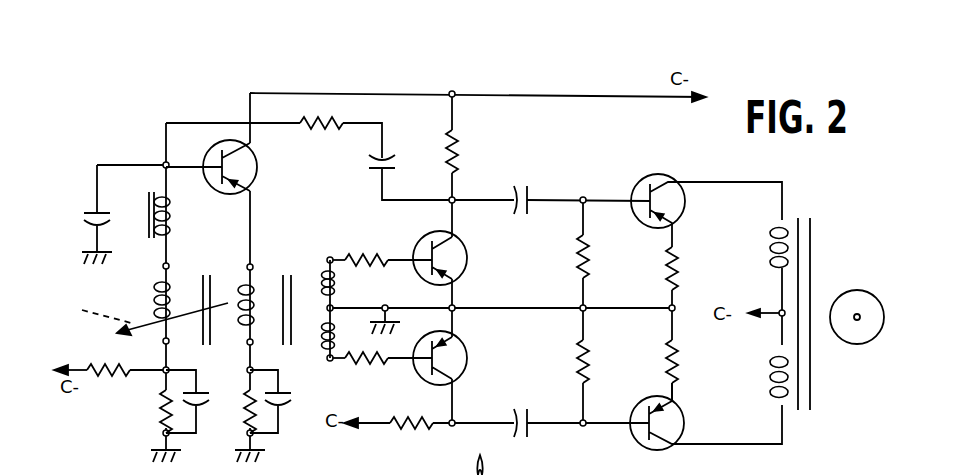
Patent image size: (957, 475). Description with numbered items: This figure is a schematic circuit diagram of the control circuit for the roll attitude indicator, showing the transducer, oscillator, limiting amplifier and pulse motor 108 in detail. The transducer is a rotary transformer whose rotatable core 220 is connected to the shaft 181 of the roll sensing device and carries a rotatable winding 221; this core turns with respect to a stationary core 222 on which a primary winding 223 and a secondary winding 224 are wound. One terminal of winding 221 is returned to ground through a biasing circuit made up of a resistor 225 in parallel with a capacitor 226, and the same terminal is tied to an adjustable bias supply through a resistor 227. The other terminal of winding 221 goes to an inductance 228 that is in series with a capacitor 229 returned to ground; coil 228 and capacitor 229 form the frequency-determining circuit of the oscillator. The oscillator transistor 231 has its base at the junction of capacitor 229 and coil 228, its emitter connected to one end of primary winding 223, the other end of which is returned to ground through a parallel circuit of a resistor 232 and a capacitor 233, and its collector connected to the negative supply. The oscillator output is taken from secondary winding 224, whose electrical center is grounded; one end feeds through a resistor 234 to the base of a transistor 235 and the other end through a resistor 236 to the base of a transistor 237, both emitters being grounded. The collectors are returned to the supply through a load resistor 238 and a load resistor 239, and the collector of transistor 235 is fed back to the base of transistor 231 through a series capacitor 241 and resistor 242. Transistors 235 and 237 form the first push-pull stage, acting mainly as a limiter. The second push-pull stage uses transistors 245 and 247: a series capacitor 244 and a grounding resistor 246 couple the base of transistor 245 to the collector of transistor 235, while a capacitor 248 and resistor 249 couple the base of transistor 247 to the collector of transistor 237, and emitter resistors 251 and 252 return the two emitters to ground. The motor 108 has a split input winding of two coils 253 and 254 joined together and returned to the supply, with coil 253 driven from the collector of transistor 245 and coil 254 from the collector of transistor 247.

The motor 108 is at (866, 283).
The shaft 181 is at (142, 320).
The rotatable core 220 is at (206, 278).
The rotatable winding 221 is at (163, 307).
The stationary core 222 is at (285, 280).
The primary winding 223 is at (255, 275).
The secondary winding 224 is at (336, 284).
The resistor 225 is at (159, 414).
The capacitor 226 is at (222, 389).
The resistor 227 is at (102, 378).
The inductance 228 is at (171, 208).
The capacitor 229 is at (88, 208).
The transistor 231 is at (252, 149).
The resistor 232 is at (246, 420).
The capacitor 233 is at (291, 398).
The resistor 234 is at (348, 258).
The transistor 235 is at (468, 256).
The resistor 236 is at (382, 364).
The transistor 237 is at (469, 349).
The load resistor 238 is at (459, 146).
The load resistor 239 is at (402, 428).
The capacitor 241 is at (370, 169).
The resistor 242 is at (350, 117).
The series capacitor 244 is at (517, 193).
The transistor 245 is at (684, 215).
The resistor 246 is at (594, 258).
The transistor 247 is at (676, 412).
The capacitor 248 is at (523, 432).
The resistor 249 is at (594, 357).
The resistor 251 is at (679, 262).
The resistor 252 is at (677, 349).
The coil 253 is at (786, 218).
The coil 254 is at (782, 424).